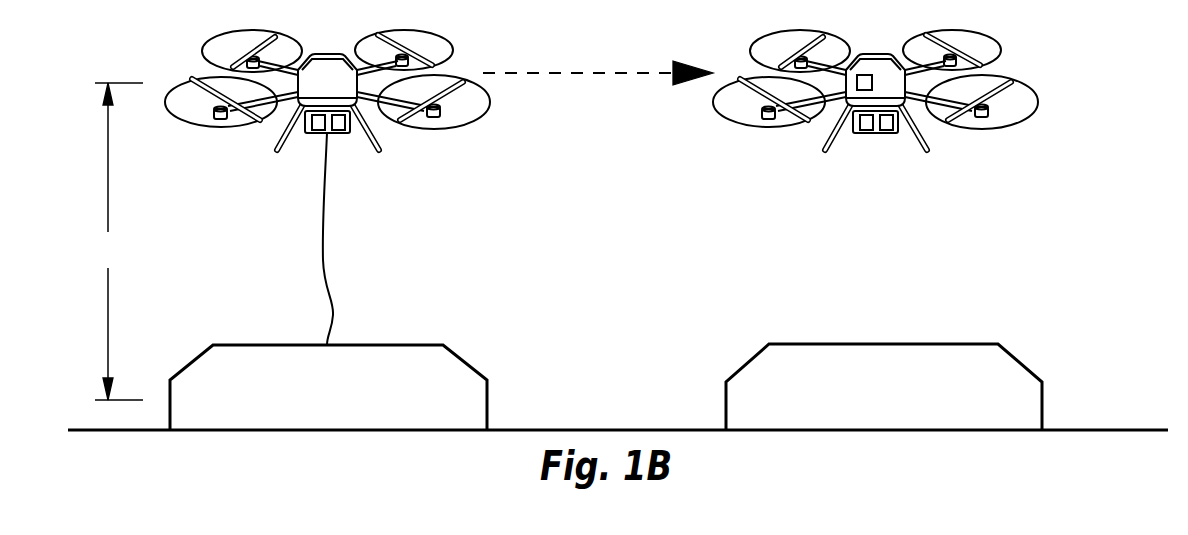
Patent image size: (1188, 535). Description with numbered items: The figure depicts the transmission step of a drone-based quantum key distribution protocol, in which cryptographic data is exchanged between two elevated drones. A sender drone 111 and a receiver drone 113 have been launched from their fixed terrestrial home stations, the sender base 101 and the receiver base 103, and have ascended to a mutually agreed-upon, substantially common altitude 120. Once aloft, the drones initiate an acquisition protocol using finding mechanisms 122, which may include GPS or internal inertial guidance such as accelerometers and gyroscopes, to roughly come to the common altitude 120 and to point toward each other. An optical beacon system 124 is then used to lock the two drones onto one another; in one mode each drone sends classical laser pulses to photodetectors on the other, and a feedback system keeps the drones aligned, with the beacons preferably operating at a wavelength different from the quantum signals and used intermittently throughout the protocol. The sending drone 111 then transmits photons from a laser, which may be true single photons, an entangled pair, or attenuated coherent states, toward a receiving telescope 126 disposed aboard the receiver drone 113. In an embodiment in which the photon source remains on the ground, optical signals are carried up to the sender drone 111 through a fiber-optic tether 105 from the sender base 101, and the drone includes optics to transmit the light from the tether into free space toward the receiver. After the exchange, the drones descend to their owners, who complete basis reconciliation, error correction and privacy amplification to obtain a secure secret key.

The sender base 101 is at (337, 417).
The receiver base 103 is at (903, 417).
The fiber-optic tether 105 is at (323, 260).
The sender drone 111 is at (202, 20).
The receiver drone 113 is at (737, 20).
The common altitude 120 is at (116, 241).
The finding mechanisms 122 is at (314, 124).
The optical beacon system 124 is at (340, 124).
The receiving telescope 126 is at (863, 75).